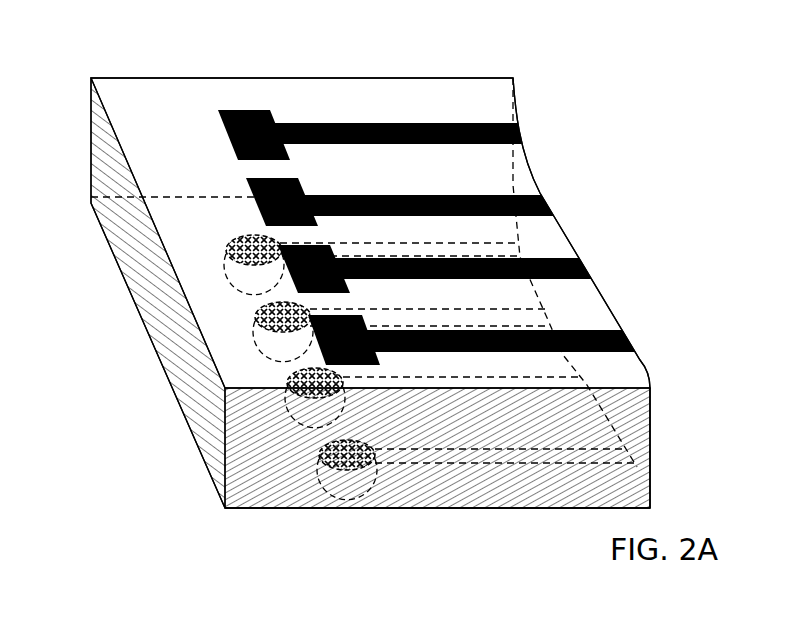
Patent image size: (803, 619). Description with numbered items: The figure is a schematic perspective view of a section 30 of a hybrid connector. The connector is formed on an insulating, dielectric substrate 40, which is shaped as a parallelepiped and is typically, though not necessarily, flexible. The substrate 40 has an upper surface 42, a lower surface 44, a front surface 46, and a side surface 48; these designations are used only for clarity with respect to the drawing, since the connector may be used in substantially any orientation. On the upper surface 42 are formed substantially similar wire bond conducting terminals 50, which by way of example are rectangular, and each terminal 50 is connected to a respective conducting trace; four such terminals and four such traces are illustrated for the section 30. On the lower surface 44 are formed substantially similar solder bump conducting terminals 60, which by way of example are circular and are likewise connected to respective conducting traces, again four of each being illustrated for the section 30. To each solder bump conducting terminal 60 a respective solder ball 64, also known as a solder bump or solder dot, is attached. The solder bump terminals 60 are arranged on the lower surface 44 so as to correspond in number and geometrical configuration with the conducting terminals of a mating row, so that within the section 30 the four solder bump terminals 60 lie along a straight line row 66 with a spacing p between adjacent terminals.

The section 30 is at (123, 90).
The substrate 40 is at (650, 420).
The upper surface 42 is at (455, 100).
The lower surface 44 is at (242, 522).
The front surface 46 is at (158, 270).
The side surface 48 is at (517, 490).
The wire bond conducting terminal 50 is at (256, 110).
The solder bump conducting terminal 60 is at (330, 460).
The solder ball 64 is at (345, 503).
The row 66 is at (373, 520).